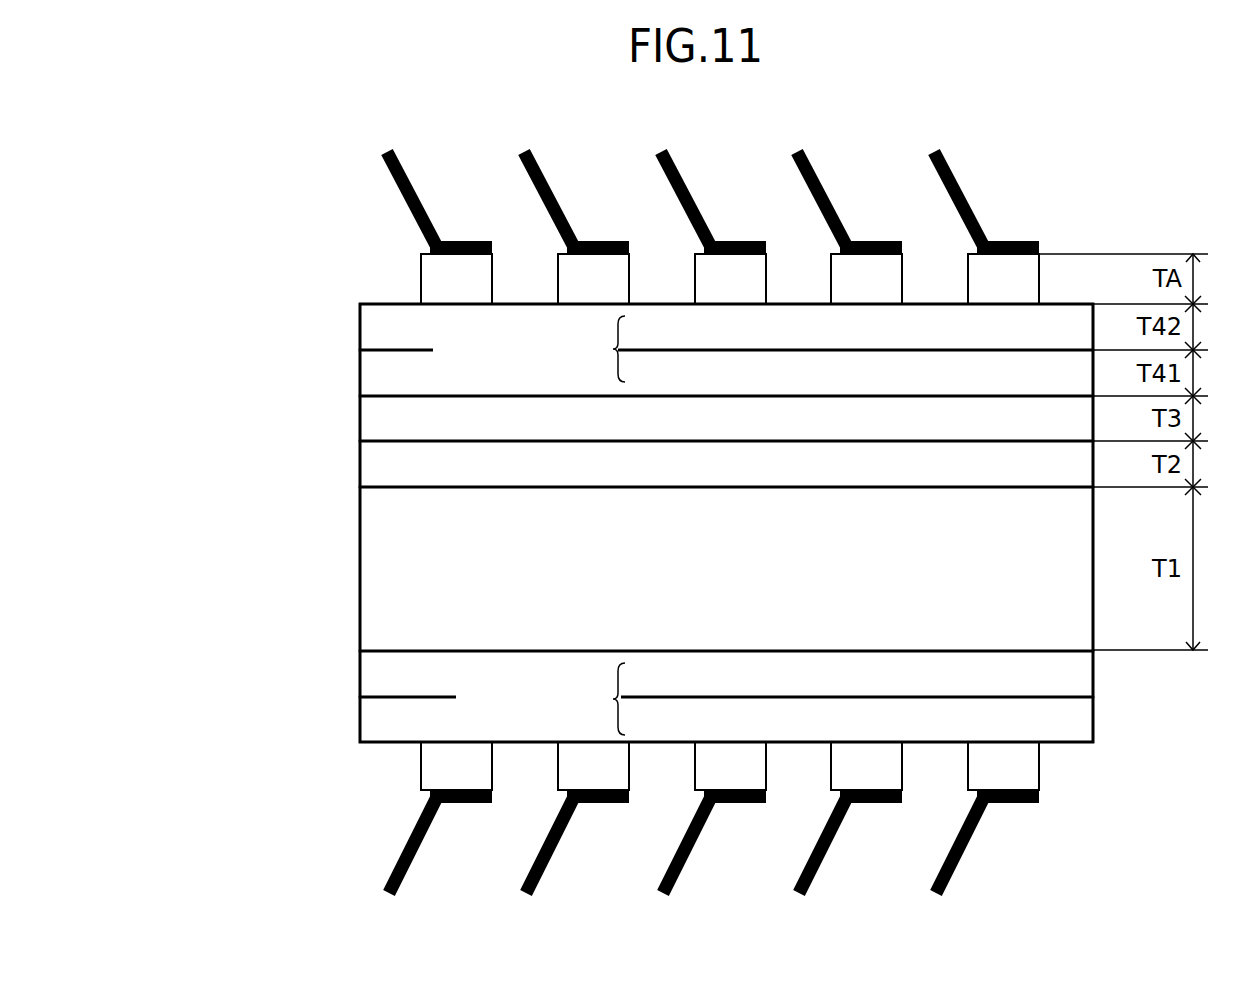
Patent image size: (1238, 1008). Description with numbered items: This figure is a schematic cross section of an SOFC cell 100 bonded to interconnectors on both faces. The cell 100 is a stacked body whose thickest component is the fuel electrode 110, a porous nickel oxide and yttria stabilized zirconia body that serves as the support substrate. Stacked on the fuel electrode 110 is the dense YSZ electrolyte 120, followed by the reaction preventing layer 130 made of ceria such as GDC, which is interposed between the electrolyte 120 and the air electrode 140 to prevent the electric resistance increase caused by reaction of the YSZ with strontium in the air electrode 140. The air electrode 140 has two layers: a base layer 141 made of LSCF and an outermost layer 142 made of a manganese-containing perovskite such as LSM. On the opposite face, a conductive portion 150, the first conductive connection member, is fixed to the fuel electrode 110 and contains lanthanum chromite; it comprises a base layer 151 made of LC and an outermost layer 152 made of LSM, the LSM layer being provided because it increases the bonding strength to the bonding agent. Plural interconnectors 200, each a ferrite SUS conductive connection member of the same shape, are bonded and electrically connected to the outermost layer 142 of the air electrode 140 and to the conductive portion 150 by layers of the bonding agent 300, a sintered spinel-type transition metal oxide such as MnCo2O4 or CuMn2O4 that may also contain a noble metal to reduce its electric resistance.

The SOFC cell 100 is at (168, 456).
The fuel electrode 110 is at (360, 563).
The electrolyte 120 is at (360, 466).
The reaction preventing layer 130 is at (360, 420).
The air electrode 140 is at (659, 350).
The base layer 141 is at (360, 372).
The outermost layer 142 is at (360, 329).
The conductive portion 150 is at (659, 696).
The base layer 151 is at (360, 674).
The outermost layer 152 is at (360, 721).
The interconnector 200 is at (396, 183).
The bonding agent 300 is at (421, 277).